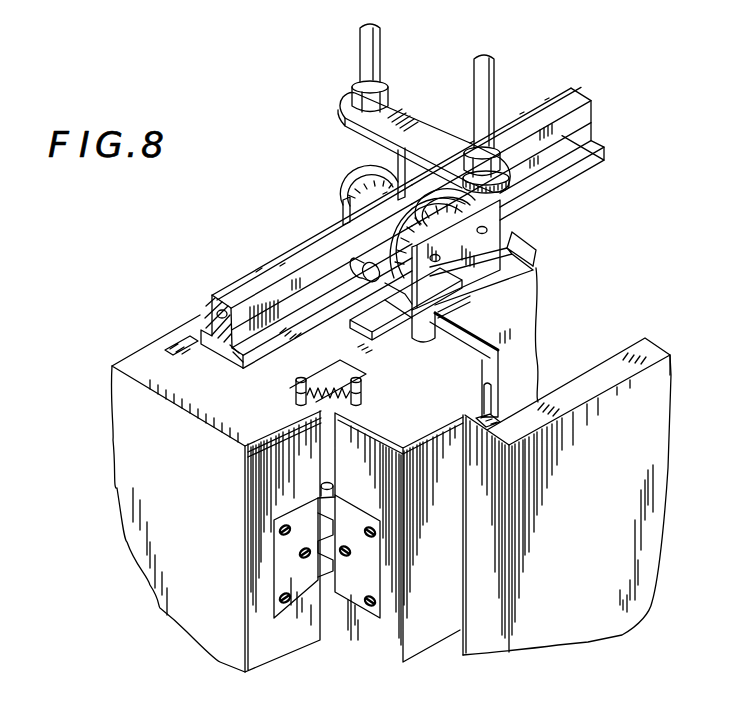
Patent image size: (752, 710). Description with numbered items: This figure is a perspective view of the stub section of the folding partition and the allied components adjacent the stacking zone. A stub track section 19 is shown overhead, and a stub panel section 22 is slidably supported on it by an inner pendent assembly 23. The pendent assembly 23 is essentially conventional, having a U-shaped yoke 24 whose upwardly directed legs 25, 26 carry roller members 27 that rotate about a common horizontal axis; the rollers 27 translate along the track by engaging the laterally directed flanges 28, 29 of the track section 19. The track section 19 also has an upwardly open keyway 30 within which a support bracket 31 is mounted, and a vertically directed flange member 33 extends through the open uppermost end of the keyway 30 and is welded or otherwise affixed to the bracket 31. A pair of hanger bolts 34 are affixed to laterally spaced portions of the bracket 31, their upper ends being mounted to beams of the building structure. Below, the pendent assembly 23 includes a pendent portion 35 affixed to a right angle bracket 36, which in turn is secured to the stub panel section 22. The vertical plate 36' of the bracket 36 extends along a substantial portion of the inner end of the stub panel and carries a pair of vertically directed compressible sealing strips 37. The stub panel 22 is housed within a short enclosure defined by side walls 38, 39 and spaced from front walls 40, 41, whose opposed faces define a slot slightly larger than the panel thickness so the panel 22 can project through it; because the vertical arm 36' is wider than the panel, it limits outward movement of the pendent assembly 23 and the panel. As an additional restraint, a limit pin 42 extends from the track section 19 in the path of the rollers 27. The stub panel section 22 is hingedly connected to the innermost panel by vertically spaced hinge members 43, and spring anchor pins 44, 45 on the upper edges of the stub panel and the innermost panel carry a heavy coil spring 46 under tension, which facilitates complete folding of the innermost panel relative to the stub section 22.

The stub track section 19 is at (600, 116).
The stub panel section 22 is at (419, 648).
The inner pendent assembly 23 is at (516, 236).
The U-shaped yoke 24 is at (393, 313).
The yoke leg 25 is at (499, 208).
The yoke leg 26 is at (343, 212).
The roller members 27 is at (383, 190).
The laterally directed flange 28 is at (207, 337).
The laterally directed flange 29 is at (242, 357).
The keyway 30 is at (217, 313).
The support bracket 31 is at (432, 106).
The vertically directed flange member 33 is at (397, 165).
The hanger bolts 34 is at (380, 49).
The pendent portion 35 is at (440, 313).
The right angle bracket 36 is at (501, 335).
The vertical plate 36' is at (530, 383).
The compressible sealing strips 37 is at (565, 412).
The side wall 38 is at (629, 382).
The side wall 39 is at (530, 272).
The front wall 40 is at (494, 655).
The front wall 41 is at (344, 373).
The limit pin 42 is at (353, 273).
The hinge members 43 is at (340, 592).
The spring anchor pin 44 is at (362, 392).
The spring anchor pin 45 is at (296, 398).
The coil spring 46 is at (323, 399).